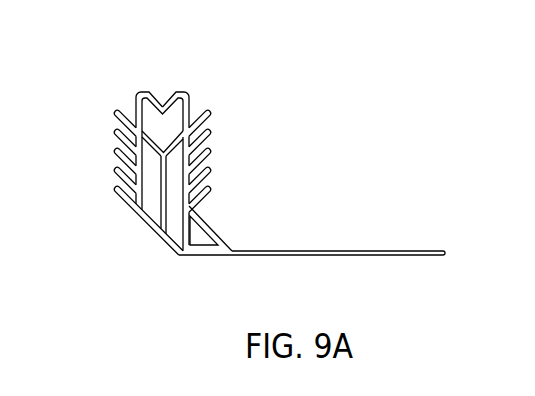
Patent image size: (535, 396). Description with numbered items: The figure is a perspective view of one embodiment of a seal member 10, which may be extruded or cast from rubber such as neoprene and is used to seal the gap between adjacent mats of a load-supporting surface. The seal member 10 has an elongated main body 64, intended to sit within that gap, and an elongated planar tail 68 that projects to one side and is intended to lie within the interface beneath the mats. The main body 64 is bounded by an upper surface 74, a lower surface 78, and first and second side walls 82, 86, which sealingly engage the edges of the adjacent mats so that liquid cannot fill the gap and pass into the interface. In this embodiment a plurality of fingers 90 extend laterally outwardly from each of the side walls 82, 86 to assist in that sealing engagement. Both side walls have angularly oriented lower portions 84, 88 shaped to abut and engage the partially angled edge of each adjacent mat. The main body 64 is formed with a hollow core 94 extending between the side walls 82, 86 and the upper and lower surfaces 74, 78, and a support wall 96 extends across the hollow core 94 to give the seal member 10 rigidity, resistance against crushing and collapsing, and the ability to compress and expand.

The seal member 10 is at (392, 104).
The main body 64 is at (183, 93).
The tail 68 is at (373, 251).
The upper surface 74 is at (164, 103).
The lower surface 78 is at (200, 257).
The first side wall 82 is at (135, 99).
The lower portion of first side wall 84 is at (160, 229).
The second side wall 86 is at (194, 103).
The lower portion of second side wall 88 is at (215, 223).
The fingers 90 is at (118, 113).
The hollow core 94 is at (152, 127).
The support wall 96 is at (146, 153).